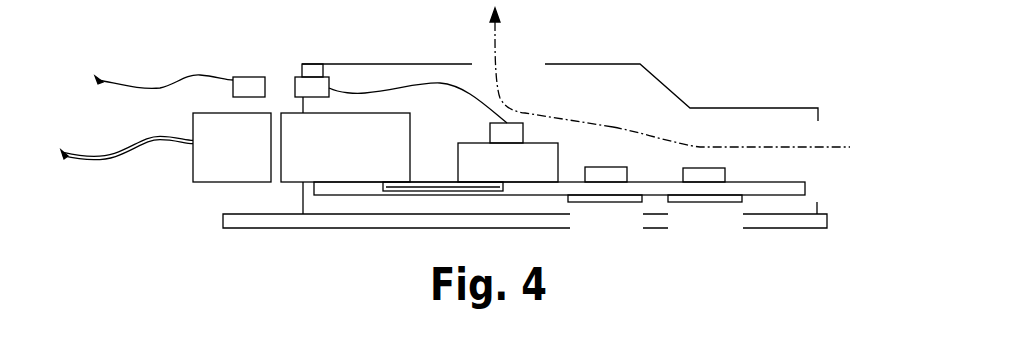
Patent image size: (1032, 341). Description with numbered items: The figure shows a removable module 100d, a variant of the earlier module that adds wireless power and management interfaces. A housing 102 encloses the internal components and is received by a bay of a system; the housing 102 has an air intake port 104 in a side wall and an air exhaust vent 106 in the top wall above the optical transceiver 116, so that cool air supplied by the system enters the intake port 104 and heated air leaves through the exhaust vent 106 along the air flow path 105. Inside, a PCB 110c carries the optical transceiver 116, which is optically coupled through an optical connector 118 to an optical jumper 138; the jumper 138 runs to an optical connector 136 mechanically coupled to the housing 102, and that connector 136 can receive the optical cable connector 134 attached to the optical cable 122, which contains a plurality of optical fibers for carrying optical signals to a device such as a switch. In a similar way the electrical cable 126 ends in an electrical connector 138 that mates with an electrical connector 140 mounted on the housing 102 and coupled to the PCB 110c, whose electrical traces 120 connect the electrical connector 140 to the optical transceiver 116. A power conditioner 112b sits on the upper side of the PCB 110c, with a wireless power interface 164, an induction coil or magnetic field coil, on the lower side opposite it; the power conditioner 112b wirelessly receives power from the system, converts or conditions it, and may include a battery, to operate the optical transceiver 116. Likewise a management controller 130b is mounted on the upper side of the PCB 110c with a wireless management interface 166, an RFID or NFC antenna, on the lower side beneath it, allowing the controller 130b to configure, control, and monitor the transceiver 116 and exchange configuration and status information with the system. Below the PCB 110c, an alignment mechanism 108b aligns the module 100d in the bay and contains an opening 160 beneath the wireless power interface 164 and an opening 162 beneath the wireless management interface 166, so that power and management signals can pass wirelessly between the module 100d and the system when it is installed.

The removable module 100d is at (690, 35).
The housing 102 is at (792, 108).
The air intake port 104 is at (820, 134).
The air flow path 105 is at (697, 146).
The air exhaust vent 106 is at (517, 65).
The alignment mechanism 108b is at (792, 229).
The PCB 110c is at (805, 188).
The power conditioner 112b is at (689, 168).
The optical transceiver 116 is at (552, 142).
The optical connector 118 is at (515, 123).
The electrical traces 120 is at (440, 187).
The optical cable 122 is at (150, 87).
The electrical cable 126 is at (150, 137).
The management controller 130b is at (610, 166).
The optical cable connector 134 is at (253, 77).
The optical connector 136 is at (320, 65).
The optical jumper 138 is at (196, 183).
The electrical connector 140 is at (410, 128).
The opening 160 is at (686, 218).
The opening 162 is at (596, 218).
The wireless power interface 164 is at (727, 203).
The wireless management interface 166 is at (633, 203).